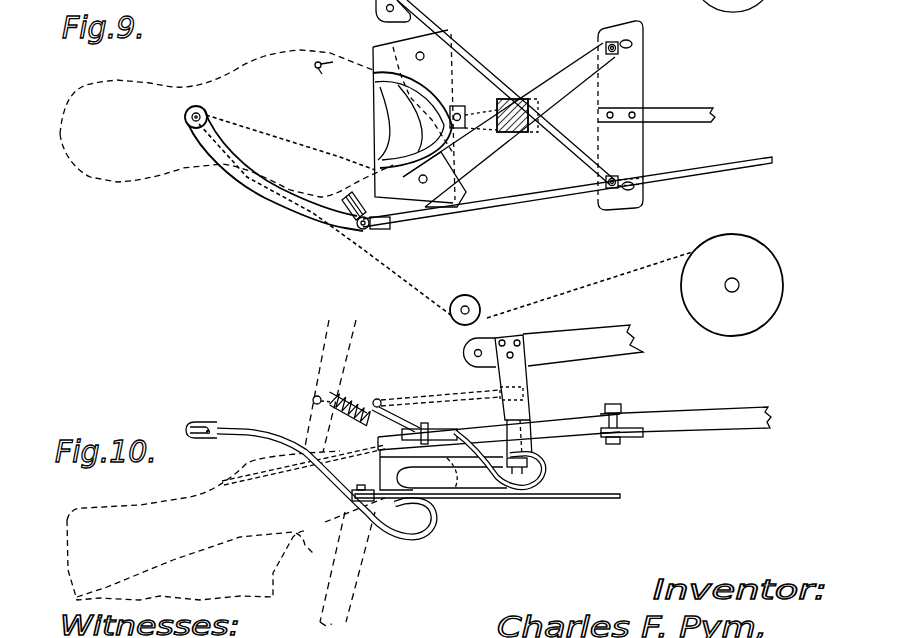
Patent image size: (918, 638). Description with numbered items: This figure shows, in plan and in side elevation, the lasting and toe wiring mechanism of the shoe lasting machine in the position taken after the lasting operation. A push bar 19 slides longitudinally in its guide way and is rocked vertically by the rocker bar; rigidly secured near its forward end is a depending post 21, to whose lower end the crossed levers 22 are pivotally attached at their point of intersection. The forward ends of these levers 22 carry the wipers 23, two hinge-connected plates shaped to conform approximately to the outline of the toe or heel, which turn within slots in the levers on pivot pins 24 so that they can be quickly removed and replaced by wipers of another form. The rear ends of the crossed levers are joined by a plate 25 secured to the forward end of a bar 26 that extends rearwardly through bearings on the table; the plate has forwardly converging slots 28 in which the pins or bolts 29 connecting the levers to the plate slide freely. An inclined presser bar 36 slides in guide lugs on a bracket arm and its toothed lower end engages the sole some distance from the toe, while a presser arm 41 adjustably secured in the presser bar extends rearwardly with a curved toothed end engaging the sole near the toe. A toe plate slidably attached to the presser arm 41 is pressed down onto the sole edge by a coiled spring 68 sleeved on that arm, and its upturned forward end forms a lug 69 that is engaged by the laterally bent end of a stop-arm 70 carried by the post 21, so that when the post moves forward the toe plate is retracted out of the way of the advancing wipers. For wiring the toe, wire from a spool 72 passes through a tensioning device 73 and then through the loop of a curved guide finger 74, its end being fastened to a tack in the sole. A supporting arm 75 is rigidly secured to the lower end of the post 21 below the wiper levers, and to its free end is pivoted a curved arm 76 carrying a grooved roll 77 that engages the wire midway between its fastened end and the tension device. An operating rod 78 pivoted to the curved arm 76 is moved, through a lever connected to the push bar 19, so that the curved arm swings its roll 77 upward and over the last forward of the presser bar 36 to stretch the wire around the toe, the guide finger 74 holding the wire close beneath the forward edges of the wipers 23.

In FIG. 10, the push bar 19 is at (583, 345).
In FIG. 9, the depending post 21 is at (538, 116).
In FIG. 10, the depending post 21 is at (524, 372).
In FIG. 9, the crossed levers 22 is at (555, 146).
In FIG. 10, the crossed levers 22 is at (572, 420).
In FIG. 9, the wipers 23 is at (393, 115).
In FIG. 10, the wipers 23 is at (383, 452).
In FIG. 9, the pivot pins 24 is at (428, 180).
In FIG. 10, the pivot pins 24 is at (424, 429).
In FIG. 9, the plate 25 is at (637, 75).
In FIG. 10, the plate 25 is at (638, 440).
In FIG. 9, the bar 26 is at (685, 113).
In FIG. 10, the bar 26 is at (719, 428).
In FIG. 9, the forwardly converging slots 28 is at (634, 43).
In FIG. 9, the pins or bolts 29 is at (600, 43).
In FIG. 10, the presser bar 36 is at (327, 353).
In FIG. 10, the presser arm 41 is at (313, 398).
In FIG. 10, the coiled spring 68 is at (357, 393).
In FIG. 10, the lug 69 is at (378, 400).
In FIG. 10, the stop-arm 70 is at (472, 397).
In FIG. 9, the spool 72 is at (732, 168).
In FIG. 9, the tensioning device 73 is at (480, 297).
In FIG. 9, the curved guide finger 74 is at (470, 112).
In FIG. 10, the curved guide finger 74 is at (513, 489).
In FIG. 9, the supporting arm 75 is at (464, 108).
In FIG. 10, the supporting arm 75 is at (467, 458).
In FIG. 9, the curved arm 76 is at (260, 200).
In FIG. 10, the curved arm 76 is at (245, 428).
In FIG. 9, the grooved roll 77 is at (186, 117).
In FIG. 10, the grooved roll 77 is at (186, 428).
In FIG. 9, the operating rod 78 is at (715, 168).
In FIG. 10, the operating rod 78 is at (560, 499).